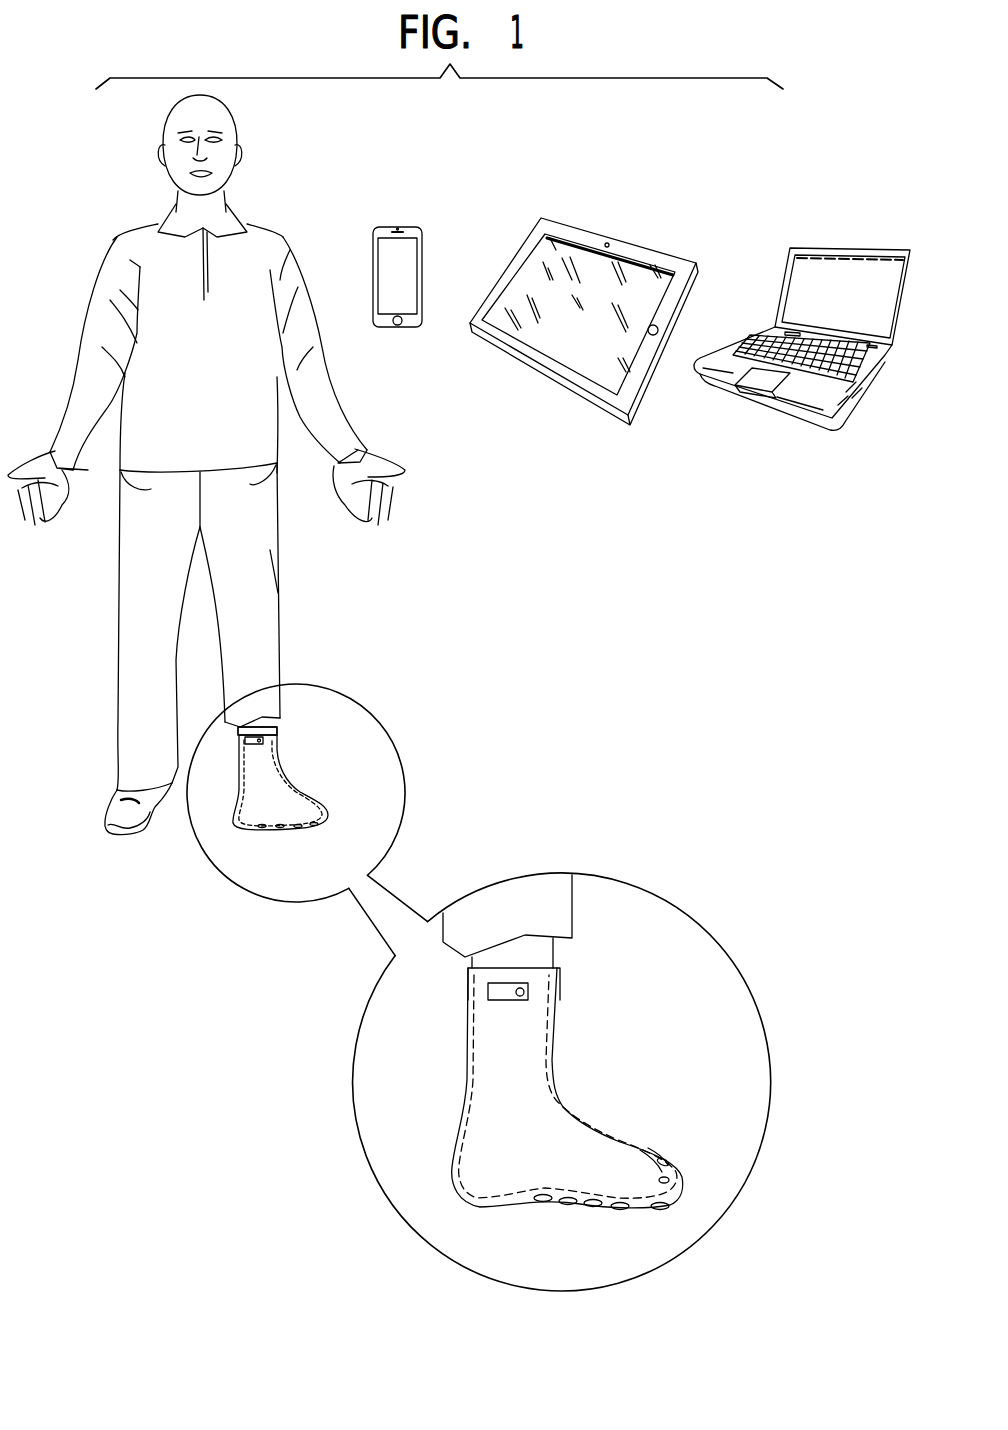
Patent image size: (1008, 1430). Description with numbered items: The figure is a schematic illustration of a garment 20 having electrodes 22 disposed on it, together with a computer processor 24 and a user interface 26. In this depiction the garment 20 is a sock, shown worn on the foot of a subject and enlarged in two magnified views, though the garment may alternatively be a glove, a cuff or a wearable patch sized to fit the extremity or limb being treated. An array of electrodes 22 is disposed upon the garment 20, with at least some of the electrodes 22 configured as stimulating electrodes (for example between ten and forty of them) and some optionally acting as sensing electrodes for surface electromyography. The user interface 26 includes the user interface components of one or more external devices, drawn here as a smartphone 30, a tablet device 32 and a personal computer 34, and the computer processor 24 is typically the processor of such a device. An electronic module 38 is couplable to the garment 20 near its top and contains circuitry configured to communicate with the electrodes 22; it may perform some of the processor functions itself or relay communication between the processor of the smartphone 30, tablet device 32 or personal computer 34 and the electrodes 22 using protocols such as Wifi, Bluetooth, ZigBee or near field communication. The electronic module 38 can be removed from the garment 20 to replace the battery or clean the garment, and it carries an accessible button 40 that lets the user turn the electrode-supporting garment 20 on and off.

The garment 20 is at (560, 1082).
The electrodes 22 is at (668, 1163).
The computer processor 24 is at (917, 199).
The user interface 26 is at (641, 290).
The smartphone 30 is at (422, 246).
The tablet device 32 is at (645, 248).
The personal computer 34 is at (852, 248).
The electronic module 38 is at (488, 989).
The accessible button 40 is at (528, 991).